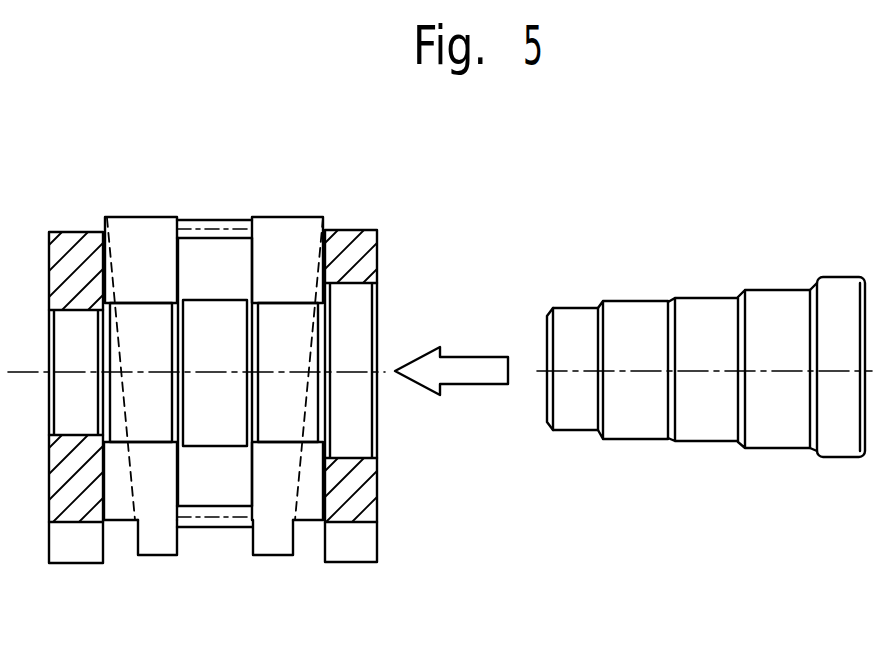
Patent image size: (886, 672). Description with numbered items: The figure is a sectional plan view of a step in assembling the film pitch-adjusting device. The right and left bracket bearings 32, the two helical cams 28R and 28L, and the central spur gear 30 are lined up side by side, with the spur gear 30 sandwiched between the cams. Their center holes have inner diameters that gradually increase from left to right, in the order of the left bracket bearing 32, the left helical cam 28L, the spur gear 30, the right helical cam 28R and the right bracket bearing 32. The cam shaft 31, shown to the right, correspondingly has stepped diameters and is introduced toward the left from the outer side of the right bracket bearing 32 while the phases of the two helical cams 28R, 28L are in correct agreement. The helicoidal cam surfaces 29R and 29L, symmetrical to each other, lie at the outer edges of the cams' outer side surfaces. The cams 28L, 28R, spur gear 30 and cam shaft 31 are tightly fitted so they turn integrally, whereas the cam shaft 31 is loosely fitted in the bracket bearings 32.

The bracket bearing 32 is at (68, 232).
The left helical cam 28L is at (138, 216).
The right helical cam 28R is at (290, 217).
The spur gear 30 is at (213, 221).
The left cam surface 29L is at (138, 524).
The right cam surface 29R is at (295, 524).
The cam shaft 31 is at (705, 293).